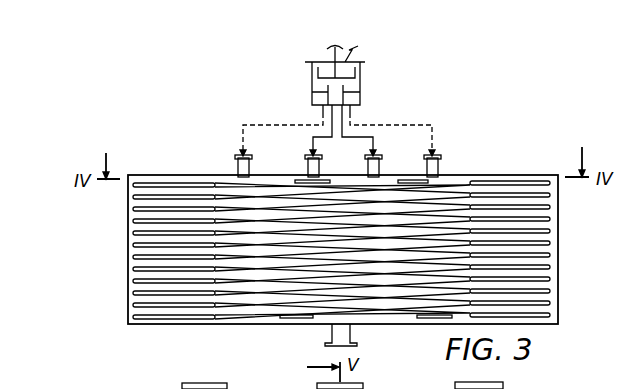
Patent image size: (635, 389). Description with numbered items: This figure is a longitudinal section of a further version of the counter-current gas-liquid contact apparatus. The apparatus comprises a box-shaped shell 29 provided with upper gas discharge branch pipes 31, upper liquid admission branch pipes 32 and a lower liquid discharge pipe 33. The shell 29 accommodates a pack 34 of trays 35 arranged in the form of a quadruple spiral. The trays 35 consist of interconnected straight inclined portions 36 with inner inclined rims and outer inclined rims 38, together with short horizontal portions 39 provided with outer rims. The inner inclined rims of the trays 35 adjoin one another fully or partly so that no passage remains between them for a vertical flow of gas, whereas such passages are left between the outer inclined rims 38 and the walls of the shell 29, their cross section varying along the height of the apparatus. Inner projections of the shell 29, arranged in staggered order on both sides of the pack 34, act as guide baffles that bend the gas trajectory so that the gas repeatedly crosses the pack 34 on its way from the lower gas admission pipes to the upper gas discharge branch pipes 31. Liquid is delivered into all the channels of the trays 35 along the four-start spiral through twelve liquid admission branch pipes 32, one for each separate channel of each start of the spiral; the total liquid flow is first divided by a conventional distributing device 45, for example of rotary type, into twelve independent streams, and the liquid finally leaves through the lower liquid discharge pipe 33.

The box-shaped shell 29 is at (127, 262).
The upper gas discharge branch pipes 31 is at (318, 386).
The upper liquid admission branch pipes 32 is at (442, 162).
The lower liquid discharge pipe 33 is at (332, 341).
The pack of trays 34 is at (564, 234).
The trays 35 is at (273, 315).
The straight inclined portions 36 is at (227, 318).
The outer inclined rims 38 is at (450, 381).
The short horizontal portions 39 is at (169, 318).
The distributing device 45 is at (312, 90).